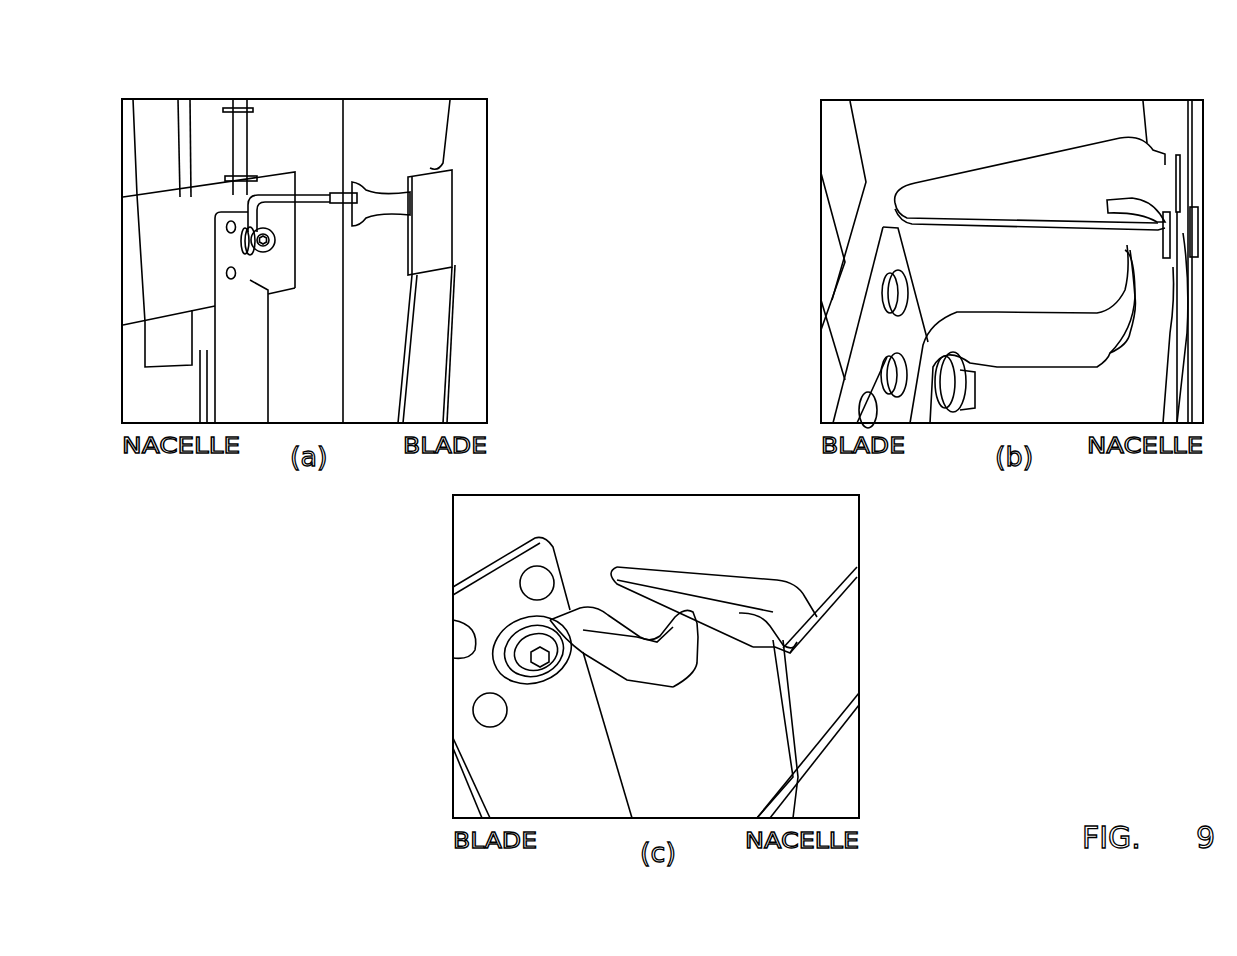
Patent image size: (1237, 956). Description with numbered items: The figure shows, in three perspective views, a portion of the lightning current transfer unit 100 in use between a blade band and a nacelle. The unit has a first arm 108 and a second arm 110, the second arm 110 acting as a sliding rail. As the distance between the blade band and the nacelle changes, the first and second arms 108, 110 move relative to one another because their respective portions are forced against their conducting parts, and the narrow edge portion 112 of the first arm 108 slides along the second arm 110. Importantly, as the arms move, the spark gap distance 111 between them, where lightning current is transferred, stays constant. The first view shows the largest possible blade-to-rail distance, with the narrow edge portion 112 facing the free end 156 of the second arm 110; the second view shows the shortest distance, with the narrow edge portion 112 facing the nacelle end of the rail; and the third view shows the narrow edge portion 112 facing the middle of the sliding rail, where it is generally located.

The lightning current transfer unit (LCTU) 100 is at (367, 90).
The first arm 108 is at (373, 210).
The second arm 110 is at (305, 193).
The spark gap distance 111 is at (347, 187).
The narrow edge portion 112 is at (343, 213).
The free end 156 is at (338, 187).